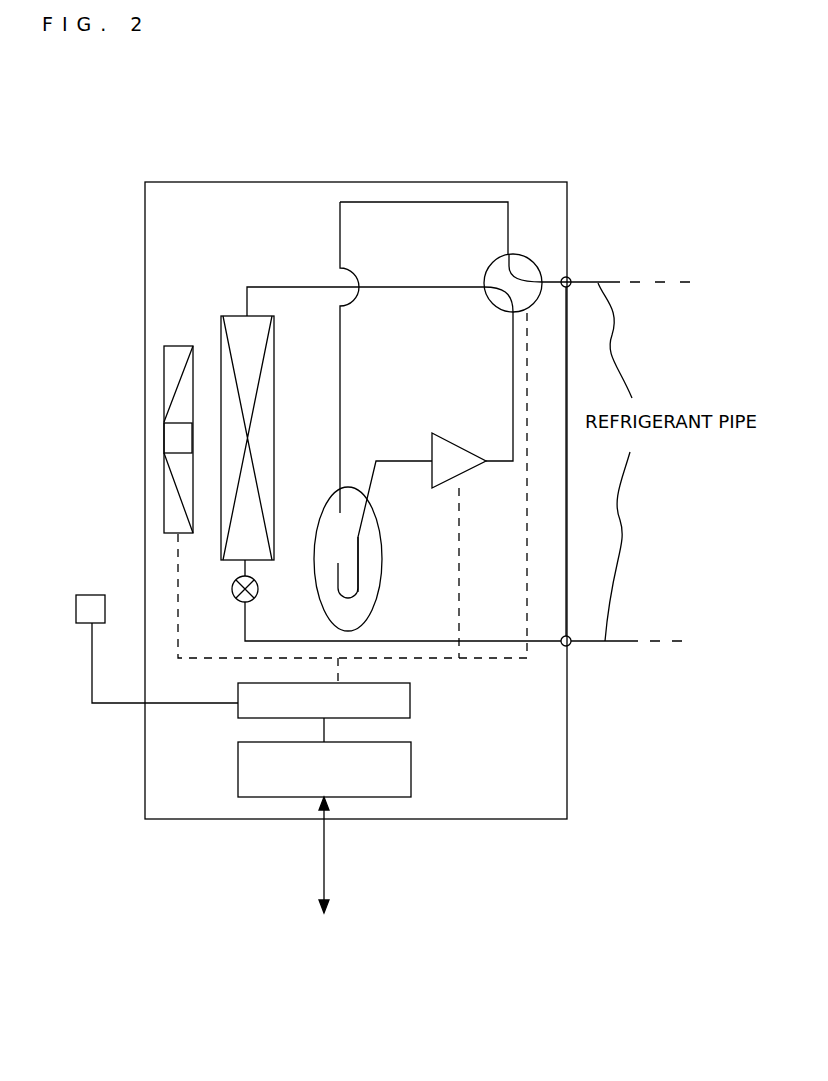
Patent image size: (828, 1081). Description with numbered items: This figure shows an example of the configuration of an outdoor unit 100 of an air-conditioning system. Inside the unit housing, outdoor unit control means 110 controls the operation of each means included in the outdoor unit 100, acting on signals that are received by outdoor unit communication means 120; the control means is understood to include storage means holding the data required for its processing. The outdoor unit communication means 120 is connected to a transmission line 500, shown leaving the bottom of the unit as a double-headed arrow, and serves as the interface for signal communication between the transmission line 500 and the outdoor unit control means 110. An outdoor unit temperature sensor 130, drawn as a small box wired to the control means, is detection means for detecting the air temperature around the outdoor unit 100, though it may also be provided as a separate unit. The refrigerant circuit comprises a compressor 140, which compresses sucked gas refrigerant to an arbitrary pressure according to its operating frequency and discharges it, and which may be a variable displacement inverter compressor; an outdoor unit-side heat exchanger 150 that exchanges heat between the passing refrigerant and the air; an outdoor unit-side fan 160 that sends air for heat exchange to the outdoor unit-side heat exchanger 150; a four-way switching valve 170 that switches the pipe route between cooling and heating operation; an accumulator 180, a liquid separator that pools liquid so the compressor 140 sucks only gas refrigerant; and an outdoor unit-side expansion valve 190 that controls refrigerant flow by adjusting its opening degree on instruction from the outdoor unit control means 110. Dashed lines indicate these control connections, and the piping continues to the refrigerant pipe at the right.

The outdoor unit 100 is at (152, 822).
The outdoor unit control means 110 is at (413, 706).
The outdoor unit communication means 120 is at (413, 776).
The outdoor unit temperature sensor 130 is at (92, 595).
The compressor 140 is at (452, 450).
The outdoor unit-side heat exchanger 150 is at (276, 355).
The outdoor unit-side fan 160 is at (188, 345).
The four-way switching valve 170 is at (486, 276).
The accumulator 180 is at (382, 548).
The outdoor unit-side expansion valve 190 is at (232, 600).
The transmission line 500 is at (327, 828).